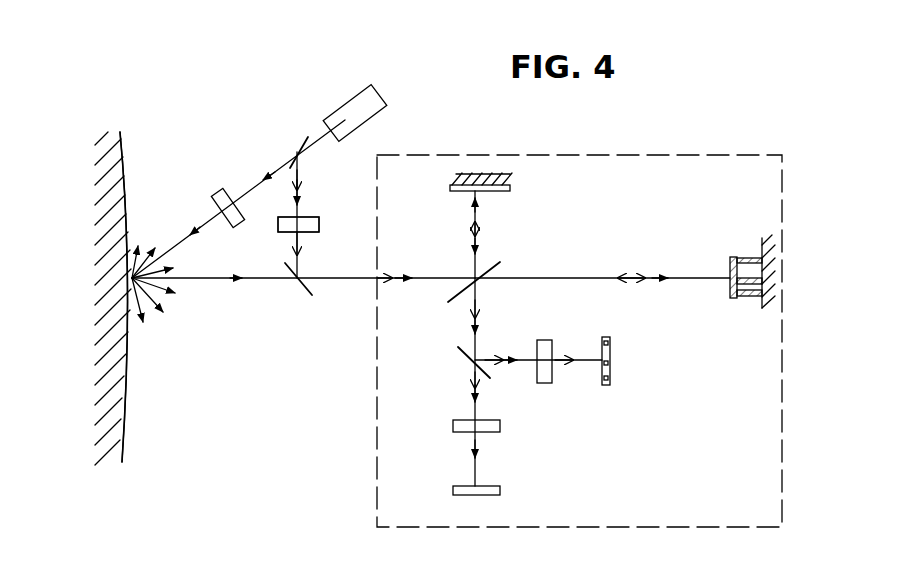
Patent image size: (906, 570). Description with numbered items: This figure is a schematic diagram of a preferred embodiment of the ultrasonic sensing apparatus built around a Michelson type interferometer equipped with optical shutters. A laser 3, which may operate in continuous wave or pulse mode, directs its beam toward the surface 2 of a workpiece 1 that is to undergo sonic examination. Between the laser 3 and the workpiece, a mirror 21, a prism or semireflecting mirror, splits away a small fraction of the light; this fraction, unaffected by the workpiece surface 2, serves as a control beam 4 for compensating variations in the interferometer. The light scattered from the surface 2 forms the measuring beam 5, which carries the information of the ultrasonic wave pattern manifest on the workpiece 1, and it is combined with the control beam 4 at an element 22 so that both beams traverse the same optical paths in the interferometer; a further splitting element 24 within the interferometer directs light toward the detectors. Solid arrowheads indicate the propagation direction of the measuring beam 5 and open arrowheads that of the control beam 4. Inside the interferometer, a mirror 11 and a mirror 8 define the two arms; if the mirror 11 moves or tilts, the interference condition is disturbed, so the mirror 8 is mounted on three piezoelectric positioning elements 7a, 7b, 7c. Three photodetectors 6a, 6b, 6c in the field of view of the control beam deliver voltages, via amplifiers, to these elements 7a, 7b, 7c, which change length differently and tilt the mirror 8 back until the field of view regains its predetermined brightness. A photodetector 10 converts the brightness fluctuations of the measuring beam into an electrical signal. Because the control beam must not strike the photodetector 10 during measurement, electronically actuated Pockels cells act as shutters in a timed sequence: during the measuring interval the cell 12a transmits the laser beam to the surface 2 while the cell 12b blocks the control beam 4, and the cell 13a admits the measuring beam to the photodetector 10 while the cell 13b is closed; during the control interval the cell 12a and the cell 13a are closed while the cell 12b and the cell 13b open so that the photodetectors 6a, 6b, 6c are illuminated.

The workpiece 1 is at (101, 130).
The surface 2 is at (124, 136).
The laser 3 is at (370, 88).
The control beam 4 is at (300, 205).
The measuring beam 5 is at (205, 282).
The photodetector 6a is at (610, 343).
The photodetector 6b is at (610, 363).
The photodetector 6c is at (611, 379).
The piezoelectric positioning element 7a is at (748, 258).
The piezoelectric positioning element 7b is at (745, 285).
The piezoelectric positioning element 7c is at (757, 298).
The mirror 8 is at (730, 258).
The photodetector 10 is at (500, 491).
The mirror 11 is at (510, 188).
The Pockels cell 12a is at (222, 195).
The Pockels cell 12b is at (318, 222).
The Pockels cell 13a is at (500, 426).
The Pockels cell 13b is at (545, 340).
The mirror 21 is at (300, 142).
The beam splitter 22 is at (303, 296).
The beam splitter 24 is at (460, 356).